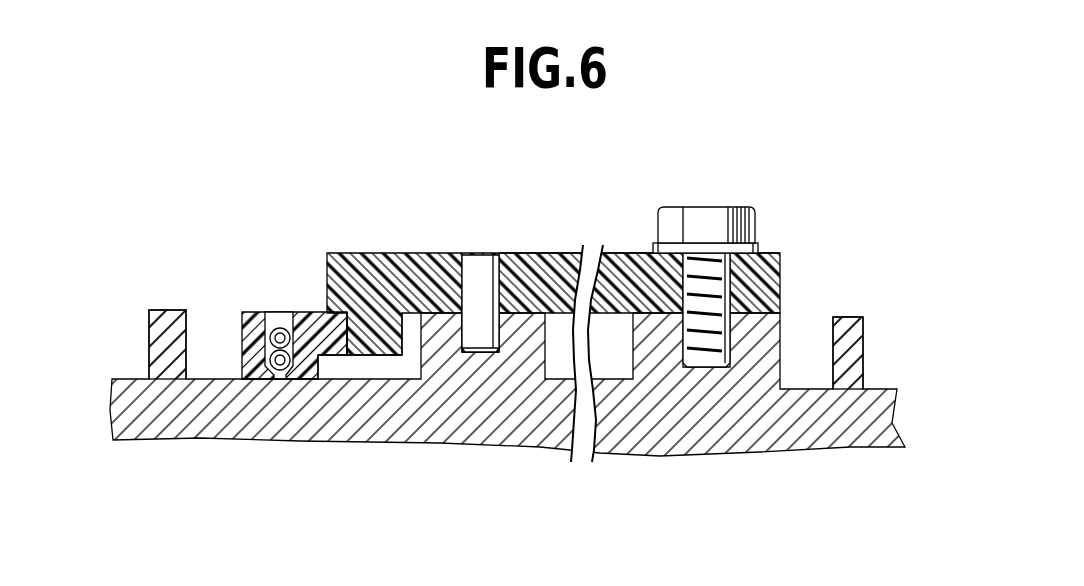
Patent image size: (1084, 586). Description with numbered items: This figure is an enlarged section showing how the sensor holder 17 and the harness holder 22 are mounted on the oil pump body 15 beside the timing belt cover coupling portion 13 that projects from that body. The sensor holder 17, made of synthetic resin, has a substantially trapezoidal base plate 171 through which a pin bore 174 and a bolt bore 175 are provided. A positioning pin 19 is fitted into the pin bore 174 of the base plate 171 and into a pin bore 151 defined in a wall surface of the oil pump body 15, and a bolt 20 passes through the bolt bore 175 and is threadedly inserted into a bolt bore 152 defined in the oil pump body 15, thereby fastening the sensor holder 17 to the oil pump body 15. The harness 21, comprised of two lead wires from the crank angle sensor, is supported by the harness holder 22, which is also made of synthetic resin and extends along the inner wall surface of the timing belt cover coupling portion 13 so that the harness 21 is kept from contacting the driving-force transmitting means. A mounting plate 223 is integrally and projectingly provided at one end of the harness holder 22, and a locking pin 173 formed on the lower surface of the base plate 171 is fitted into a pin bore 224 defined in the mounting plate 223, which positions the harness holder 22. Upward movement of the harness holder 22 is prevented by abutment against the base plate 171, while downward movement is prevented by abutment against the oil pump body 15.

The timing belt cover coupling portion 13 is at (168, 317).
The oil pump body 15 is at (697, 455).
The pin bore 151 is at (483, 355).
The bolt bore 152 is at (728, 344).
The sensor holder 17 is at (412, 253).
The base plate 171 is at (550, 253).
The locking pin 173 is at (375, 327).
The pin bore 174 is at (473, 263).
The bolt bore 175 is at (740, 290).
The positioning pin 19 is at (486, 277).
The bolt 20 is at (708, 217).
The harness 21 is at (243, 342).
The harness holder 22 is at (257, 312).
The mounting plate 223 is at (407, 340).
The pin bore 224 is at (352, 328).